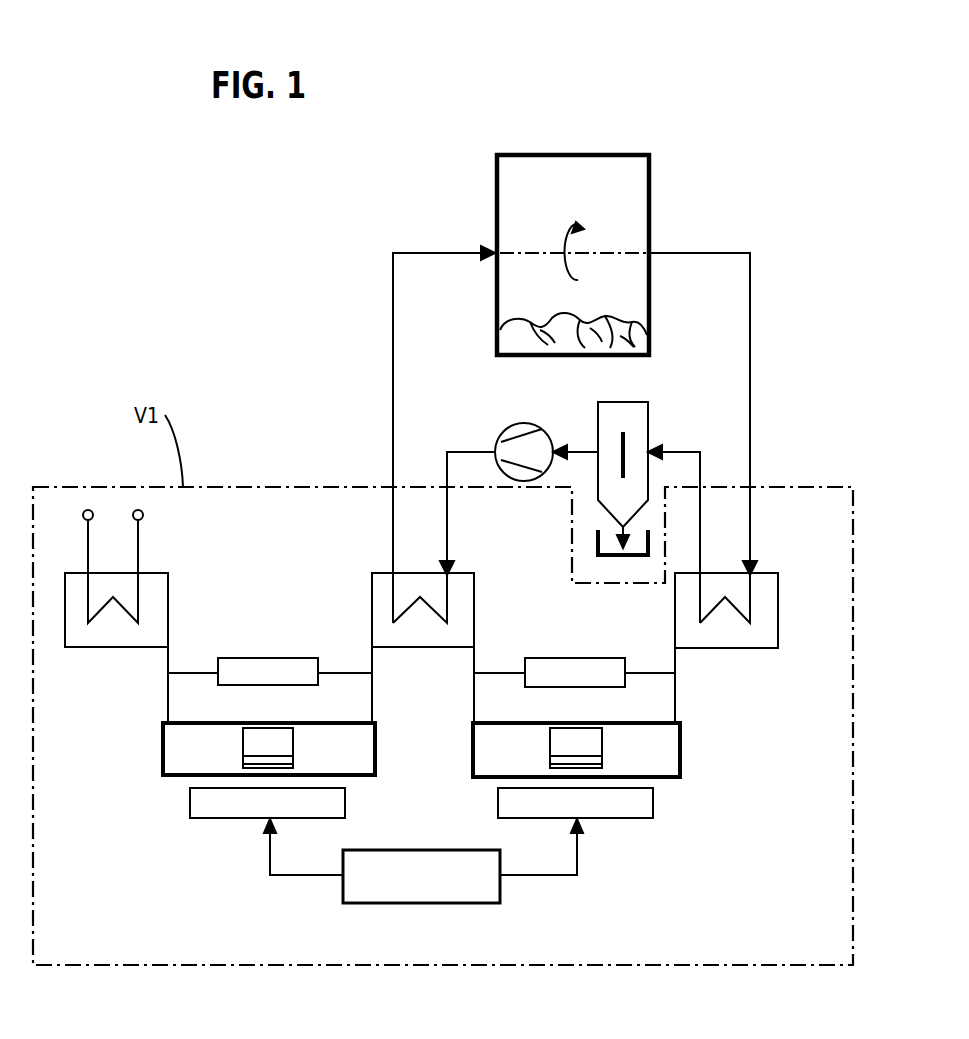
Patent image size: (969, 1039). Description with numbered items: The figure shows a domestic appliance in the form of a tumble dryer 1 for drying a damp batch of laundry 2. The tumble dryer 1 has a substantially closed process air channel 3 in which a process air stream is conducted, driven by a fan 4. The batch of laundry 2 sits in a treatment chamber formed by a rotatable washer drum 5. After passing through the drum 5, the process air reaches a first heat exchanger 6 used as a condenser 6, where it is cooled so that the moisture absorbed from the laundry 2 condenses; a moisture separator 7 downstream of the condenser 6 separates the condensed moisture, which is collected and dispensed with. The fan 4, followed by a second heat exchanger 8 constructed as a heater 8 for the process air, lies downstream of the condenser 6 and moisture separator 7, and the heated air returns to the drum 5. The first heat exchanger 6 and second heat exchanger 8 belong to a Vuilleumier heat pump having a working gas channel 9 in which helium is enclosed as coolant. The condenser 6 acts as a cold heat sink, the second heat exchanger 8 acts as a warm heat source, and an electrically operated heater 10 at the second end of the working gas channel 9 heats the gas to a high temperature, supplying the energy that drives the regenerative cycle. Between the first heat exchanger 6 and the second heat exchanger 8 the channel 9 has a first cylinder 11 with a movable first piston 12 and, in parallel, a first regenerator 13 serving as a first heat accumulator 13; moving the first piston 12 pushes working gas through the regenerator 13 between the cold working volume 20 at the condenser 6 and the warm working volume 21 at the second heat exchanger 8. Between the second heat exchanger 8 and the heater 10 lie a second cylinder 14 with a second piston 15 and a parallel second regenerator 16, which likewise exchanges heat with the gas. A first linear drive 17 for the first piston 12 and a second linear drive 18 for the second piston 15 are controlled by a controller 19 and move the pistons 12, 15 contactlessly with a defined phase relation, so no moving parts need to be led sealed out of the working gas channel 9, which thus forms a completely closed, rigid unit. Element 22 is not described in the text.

The tumble dryer 1 is at (474, 203).
The batch of laundry 2 is at (572, 382).
The process air channel 3 is at (755, 410).
The fan 4 is at (518, 423).
The washer drum 5 is at (652, 210).
The first heat exchanger 6 is at (778, 595).
The moisture separator 7 is at (650, 420).
The second heat exchanger 8 is at (373, 572).
The working gas channel 9 is at (472, 660).
The heater 10 is at (168, 592).
The first cylinder 11 is at (683, 763).
The first piston 12 is at (575, 745).
The first regenerator 13 is at (585, 658).
The second cylinder 14 is at (377, 768).
The second piston 15 is at (264, 745).
The second regenerator 16 is at (278, 658).
The first linear drive 17 is at (647, 810).
The second linear drive 18 is at (217, 808).
The controller 19 is at (458, 892).
The working volume 20 is at (662, 740).
The working volume 21 is at (500, 743).
The refrigeration unit 22 is at (180, 750).